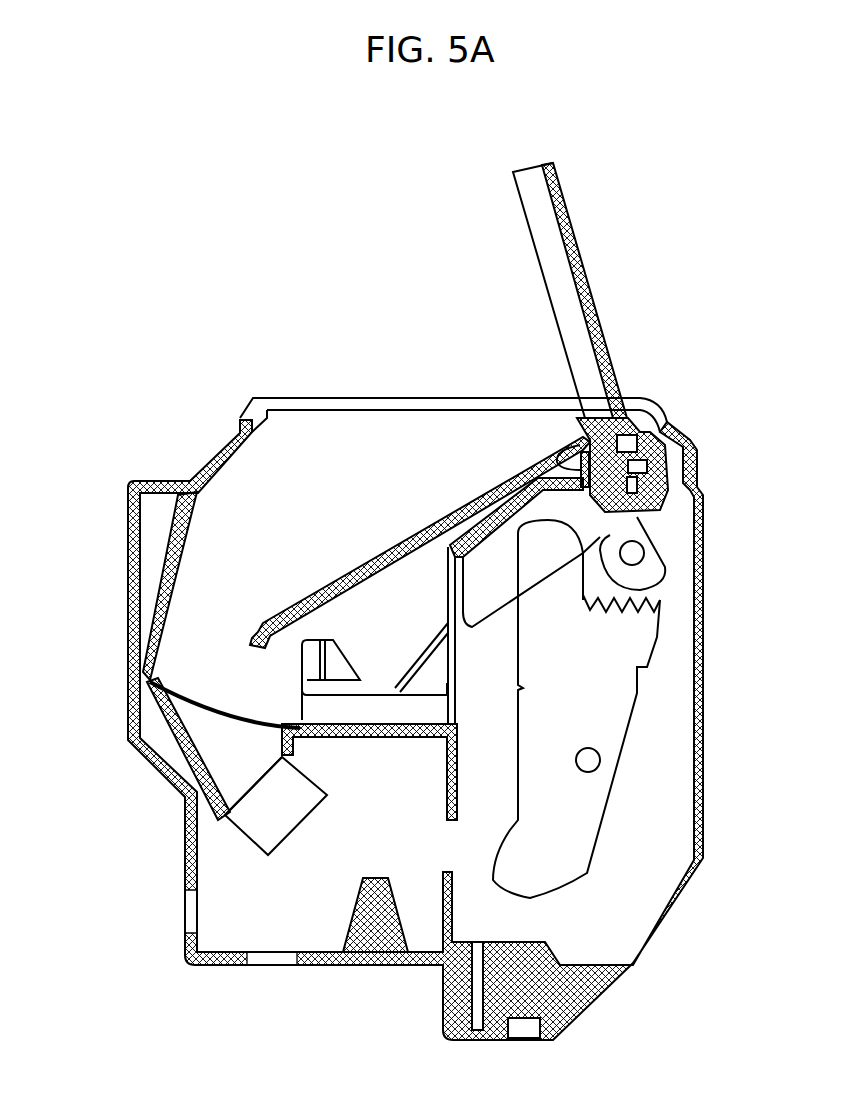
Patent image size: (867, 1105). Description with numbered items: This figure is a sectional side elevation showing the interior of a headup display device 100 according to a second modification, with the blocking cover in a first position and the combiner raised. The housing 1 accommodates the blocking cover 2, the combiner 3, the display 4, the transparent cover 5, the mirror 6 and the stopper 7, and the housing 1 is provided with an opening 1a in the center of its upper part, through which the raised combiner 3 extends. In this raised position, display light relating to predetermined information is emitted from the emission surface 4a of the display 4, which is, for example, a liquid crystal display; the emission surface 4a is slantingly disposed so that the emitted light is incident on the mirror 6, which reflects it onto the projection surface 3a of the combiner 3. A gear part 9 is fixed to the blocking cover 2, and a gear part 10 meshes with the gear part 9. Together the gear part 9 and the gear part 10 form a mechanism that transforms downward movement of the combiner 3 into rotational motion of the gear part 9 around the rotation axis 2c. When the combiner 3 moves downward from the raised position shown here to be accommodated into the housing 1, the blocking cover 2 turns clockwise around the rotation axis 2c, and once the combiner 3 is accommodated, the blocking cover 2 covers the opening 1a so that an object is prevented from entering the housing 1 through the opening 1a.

The headup display device 100 is at (323, 263).
The housing 1 is at (707, 768).
The opening 1a is at (329, 403).
The blocking cover 2 is at (440, 545).
The rotation axis 2c is at (643, 548).
The combiner 3 is at (557, 290).
The projection surface 3a is at (568, 237).
The display 4 is at (289, 794).
The emission surface 4a is at (252, 783).
The transparent cover 5 is at (190, 703).
The mirror 6 is at (160, 567).
The stopper 7 is at (315, 640).
The gear part 9 is at (663, 577).
The gear part 10 is at (640, 685).